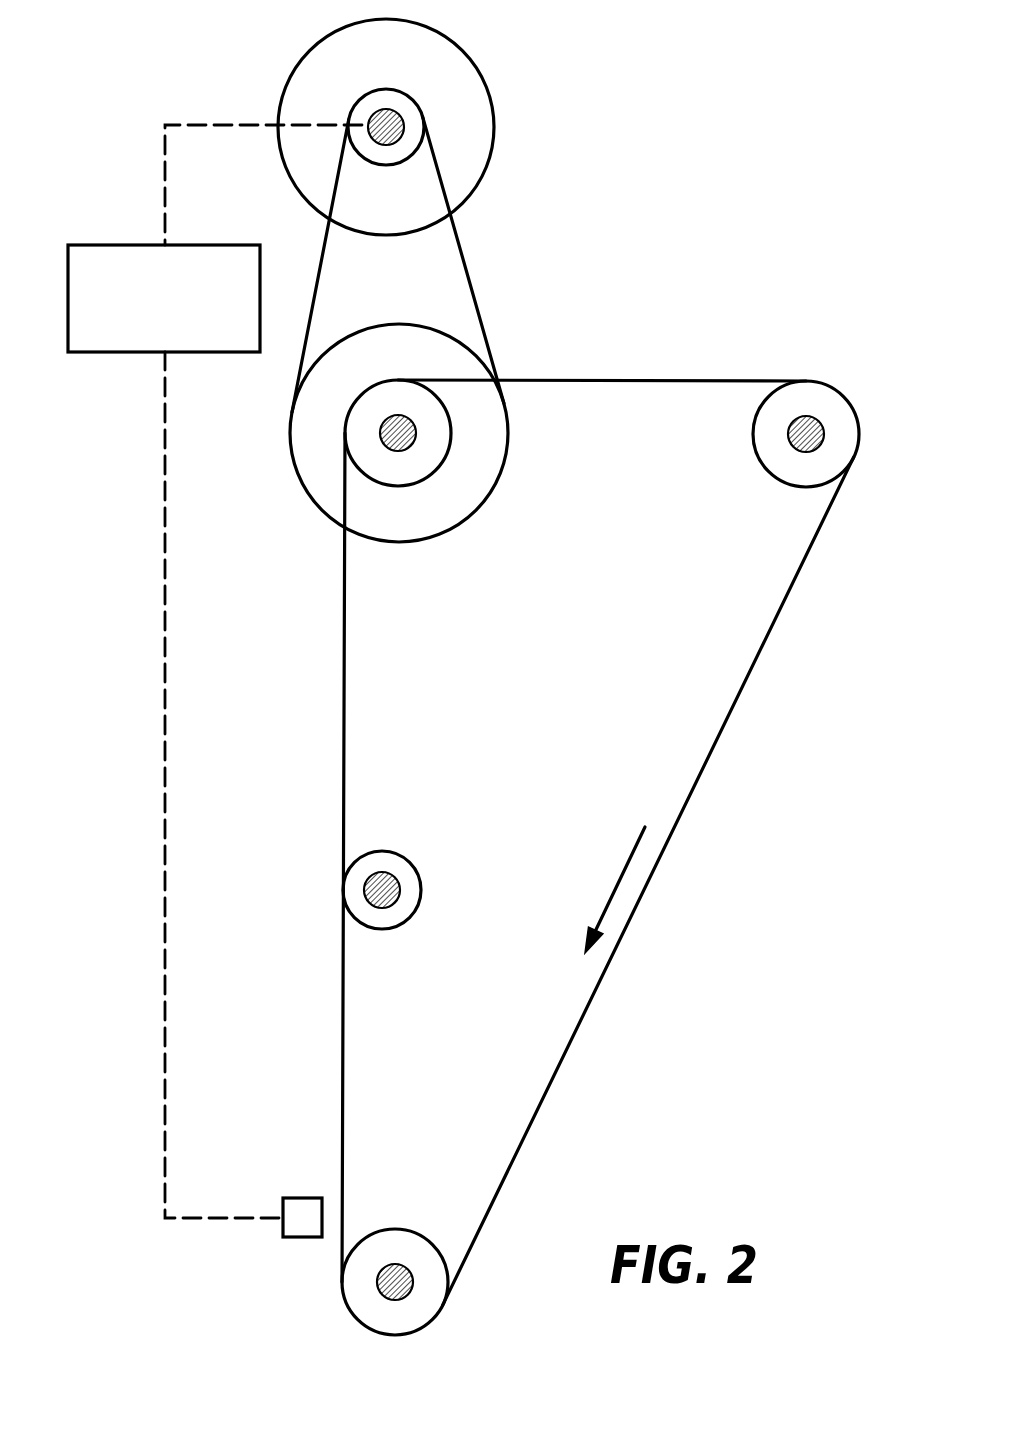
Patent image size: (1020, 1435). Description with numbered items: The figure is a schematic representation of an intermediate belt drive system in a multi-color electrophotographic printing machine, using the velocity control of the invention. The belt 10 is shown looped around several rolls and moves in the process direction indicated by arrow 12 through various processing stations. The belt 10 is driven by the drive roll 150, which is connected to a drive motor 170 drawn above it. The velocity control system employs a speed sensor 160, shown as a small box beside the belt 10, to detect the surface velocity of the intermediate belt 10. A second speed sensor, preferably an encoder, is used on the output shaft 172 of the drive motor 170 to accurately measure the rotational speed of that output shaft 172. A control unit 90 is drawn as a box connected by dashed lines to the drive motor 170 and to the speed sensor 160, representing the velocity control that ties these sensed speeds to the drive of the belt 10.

The belt 10 is at (343, 1047).
The arrow 12 is at (617, 882).
The controller 90 is at (125, 243).
The drive roll 150 is at (407, 447).
The speed sensor 160 is at (300, 1198).
The drive motor 170 is at (495, 143).
The output shaft 172 is at (400, 118).